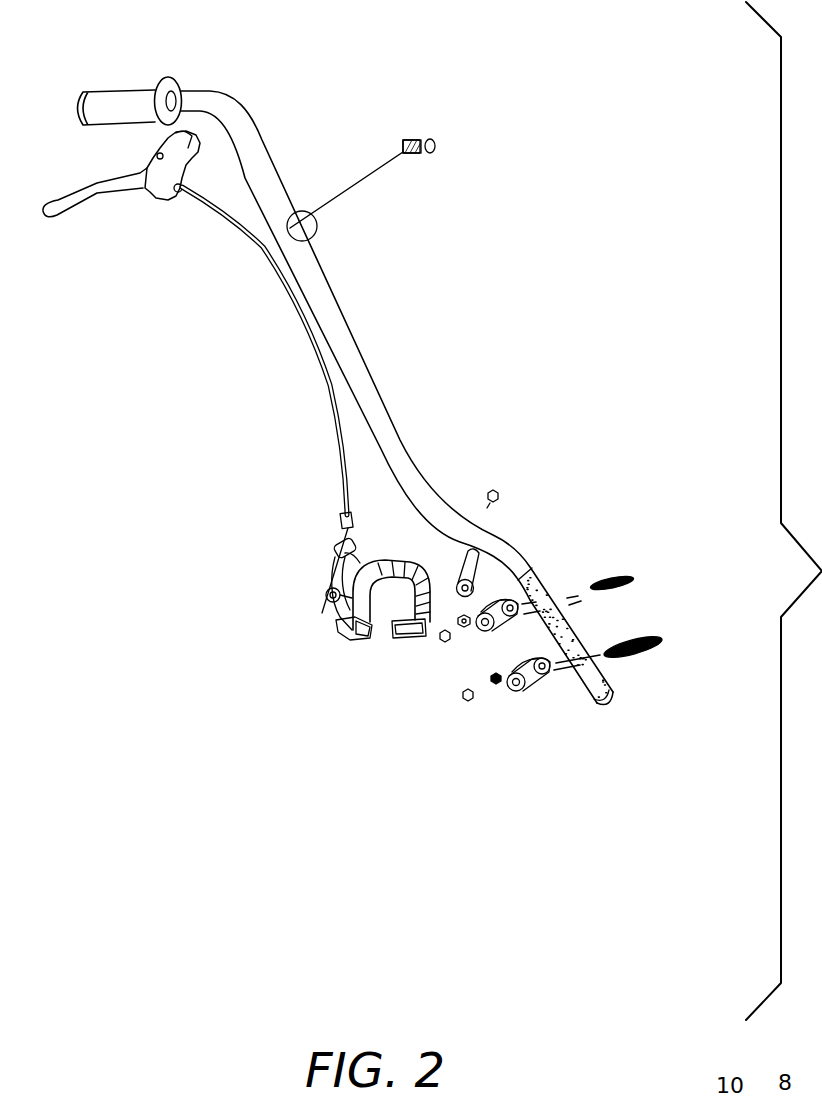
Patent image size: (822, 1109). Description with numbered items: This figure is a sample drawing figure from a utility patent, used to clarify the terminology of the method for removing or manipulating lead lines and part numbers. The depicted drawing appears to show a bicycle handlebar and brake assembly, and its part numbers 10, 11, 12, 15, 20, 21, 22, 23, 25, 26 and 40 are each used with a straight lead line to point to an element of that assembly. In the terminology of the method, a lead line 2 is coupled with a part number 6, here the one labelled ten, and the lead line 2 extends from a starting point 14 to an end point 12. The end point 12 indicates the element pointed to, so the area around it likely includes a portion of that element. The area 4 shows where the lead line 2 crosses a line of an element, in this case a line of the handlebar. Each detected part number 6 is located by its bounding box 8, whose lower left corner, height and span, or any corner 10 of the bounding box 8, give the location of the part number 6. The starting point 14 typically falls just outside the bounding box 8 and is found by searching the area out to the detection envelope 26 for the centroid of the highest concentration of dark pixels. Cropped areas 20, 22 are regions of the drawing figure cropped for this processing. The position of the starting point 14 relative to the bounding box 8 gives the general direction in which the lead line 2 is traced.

The lead line 2 is at (350, 190).
The area showing cross-section of a lead line and a line of a part or element 4 is at (298, 212).
The part number 6 is at (430, 139).
The bounding box 8 is at (414, 140).
The corner of a bounding box 10 is at (406, 140).
The sample part number in depicted drawing figure 11 is at (612, 700).
The end point of lead line 12 is at (276, 238).
The starting point of lead line 14 is at (403, 150).
The sample part number in depicted drawing figure 15 is at (128, 100).
The cropped area 20 is at (667, 640).
The sample part number in depicted drawing figure 21 is at (511, 691).
The cropped area 22 is at (441, 639).
The sample part number in depicted drawing figure 23 is at (495, 490).
The sample part number in depicted drawing figure 25 is at (474, 580).
The detection envelope 26 is at (426, 568).
The sample part number in depicted drawing figure 40 is at (162, 198).